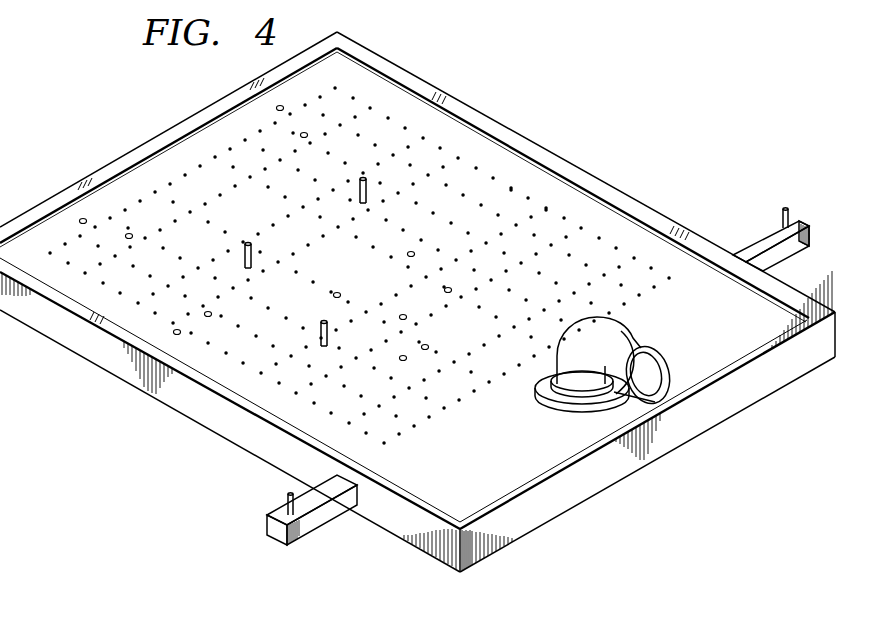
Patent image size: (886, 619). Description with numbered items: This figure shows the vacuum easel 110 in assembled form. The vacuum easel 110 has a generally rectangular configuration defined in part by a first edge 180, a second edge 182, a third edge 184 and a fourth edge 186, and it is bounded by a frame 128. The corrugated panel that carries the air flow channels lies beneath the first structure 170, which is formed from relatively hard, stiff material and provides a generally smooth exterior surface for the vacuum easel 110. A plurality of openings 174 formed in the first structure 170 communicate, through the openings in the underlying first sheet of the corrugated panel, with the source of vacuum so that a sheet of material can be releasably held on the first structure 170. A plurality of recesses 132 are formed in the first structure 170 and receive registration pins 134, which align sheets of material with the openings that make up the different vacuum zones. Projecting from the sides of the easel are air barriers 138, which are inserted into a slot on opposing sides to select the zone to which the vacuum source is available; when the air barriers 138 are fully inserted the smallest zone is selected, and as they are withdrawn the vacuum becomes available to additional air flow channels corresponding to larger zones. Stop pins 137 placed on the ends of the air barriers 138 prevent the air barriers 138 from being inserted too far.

The vacuum easel 110 is at (628, 98).
The frame 128 is at (633, 210).
The recesses 132 is at (404, 356).
The registration pins 134 is at (324, 316).
The stop pins 137 is at (785, 206).
The air barriers 138 is at (760, 238).
The first structure 170 is at (495, 469).
The openings 174 is at (545, 208).
The first edge 180 is at (581, 496).
The second edge 182 is at (481, 123).
The third edge 184 is at (143, 150).
The fourth edge 186 is at (55, 334).